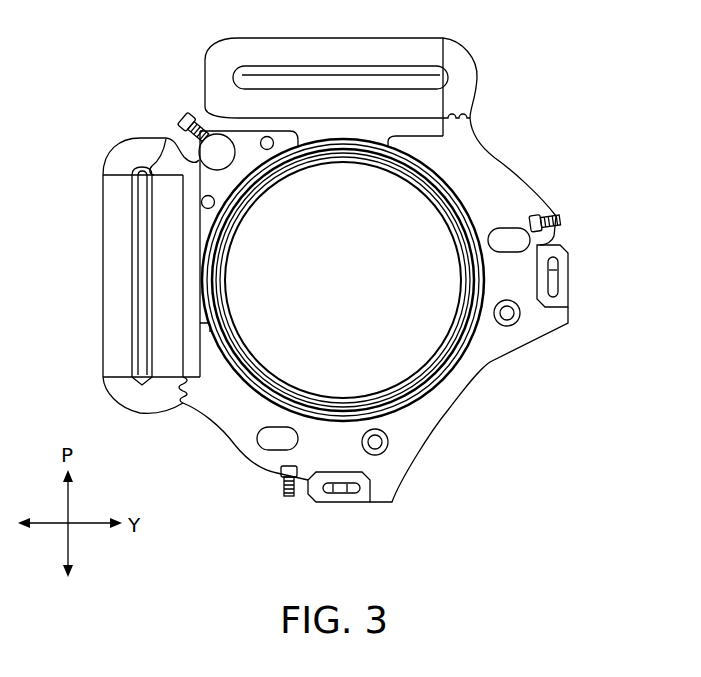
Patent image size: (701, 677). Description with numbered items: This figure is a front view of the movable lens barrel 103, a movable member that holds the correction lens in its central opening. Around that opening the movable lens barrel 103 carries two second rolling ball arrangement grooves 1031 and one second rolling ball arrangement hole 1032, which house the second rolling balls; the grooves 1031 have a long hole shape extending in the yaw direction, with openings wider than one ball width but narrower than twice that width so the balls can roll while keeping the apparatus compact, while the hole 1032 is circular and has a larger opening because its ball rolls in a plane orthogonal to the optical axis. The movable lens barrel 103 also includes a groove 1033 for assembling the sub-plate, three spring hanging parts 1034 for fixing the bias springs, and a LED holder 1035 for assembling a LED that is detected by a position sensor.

The movable lens barrel 103 is at (490, 486).
The second rolling ball arrangement groove 1031 is at (505, 238).
The second rolling ball arrangement hole 1032 is at (217, 153).
The groove 1033 is at (225, 183).
The spring hanging part 1034 is at (183, 118).
The LED holder 1035 is at (557, 277).